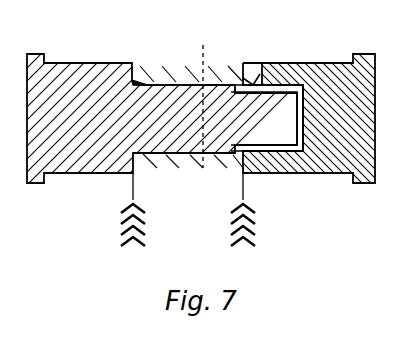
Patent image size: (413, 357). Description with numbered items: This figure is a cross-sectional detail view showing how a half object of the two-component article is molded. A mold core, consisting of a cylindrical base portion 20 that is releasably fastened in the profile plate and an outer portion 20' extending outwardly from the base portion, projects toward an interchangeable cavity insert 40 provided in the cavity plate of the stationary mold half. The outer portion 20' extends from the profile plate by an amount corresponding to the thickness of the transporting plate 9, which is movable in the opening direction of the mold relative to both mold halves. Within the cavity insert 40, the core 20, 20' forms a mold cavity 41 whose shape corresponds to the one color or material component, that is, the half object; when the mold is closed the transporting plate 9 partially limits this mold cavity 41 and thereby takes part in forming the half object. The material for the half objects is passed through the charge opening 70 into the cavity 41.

The cylindrical base portion of mold core 20 is at (165, 97).
The outer portion of mold core 20' is at (267, 160).
The cavity insert 40 is at (337, 155).
The mold cavity 41 is at (280, 88).
The charge opening 70 is at (250, 72).
The transporting plate 9 is at (188, 72).